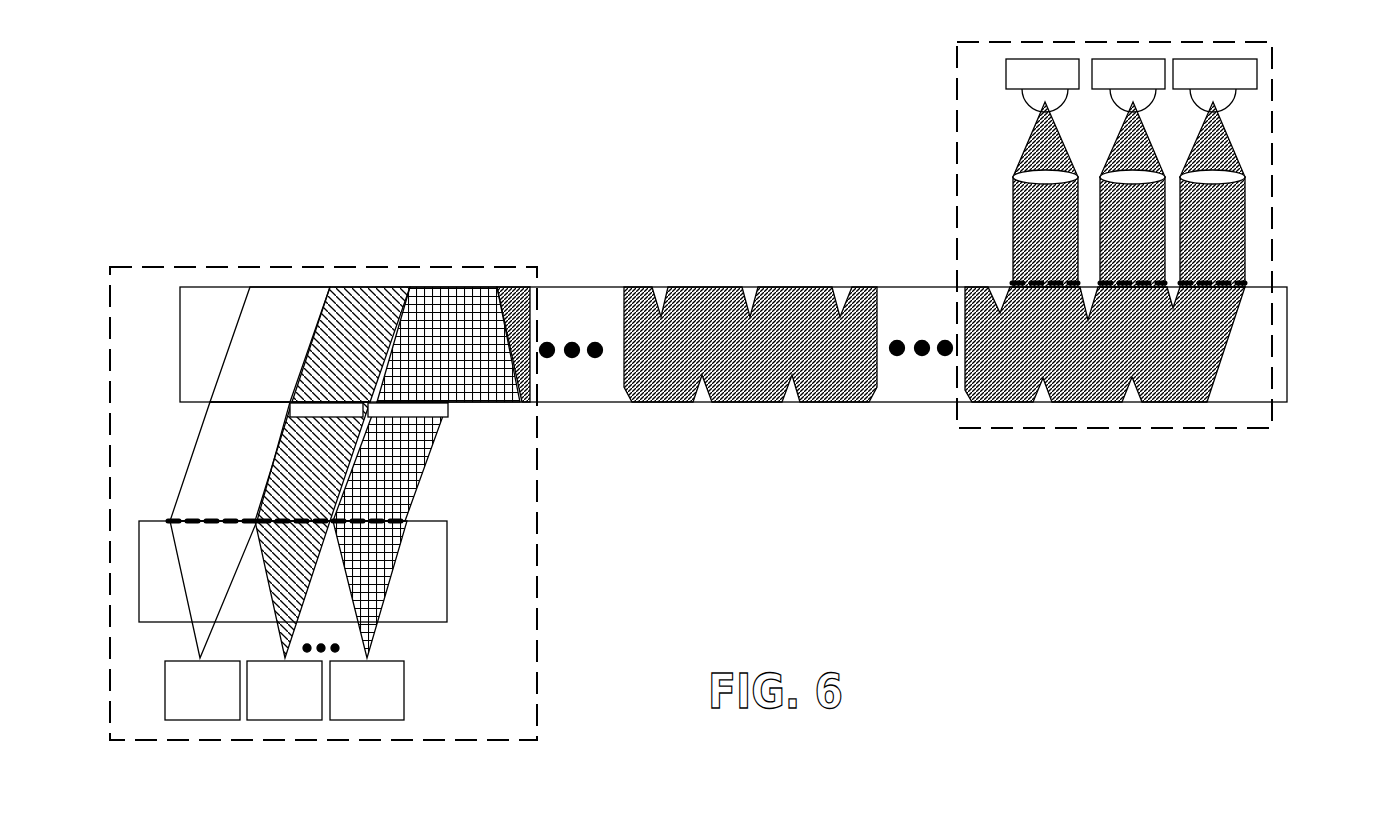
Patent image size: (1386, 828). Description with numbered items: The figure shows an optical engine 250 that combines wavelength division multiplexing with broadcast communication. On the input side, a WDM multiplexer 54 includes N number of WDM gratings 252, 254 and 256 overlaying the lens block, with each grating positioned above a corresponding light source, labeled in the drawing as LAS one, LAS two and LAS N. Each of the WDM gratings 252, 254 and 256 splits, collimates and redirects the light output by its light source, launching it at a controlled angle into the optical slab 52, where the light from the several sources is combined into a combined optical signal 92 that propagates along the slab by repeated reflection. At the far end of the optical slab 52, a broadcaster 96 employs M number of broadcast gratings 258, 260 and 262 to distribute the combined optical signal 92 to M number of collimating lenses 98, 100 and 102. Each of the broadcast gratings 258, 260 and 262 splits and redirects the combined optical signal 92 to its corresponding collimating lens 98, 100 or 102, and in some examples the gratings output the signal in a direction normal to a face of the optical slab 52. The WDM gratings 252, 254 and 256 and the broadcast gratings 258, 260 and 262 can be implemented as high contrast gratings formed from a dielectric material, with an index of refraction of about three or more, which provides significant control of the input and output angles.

The optical engine 250 is at (553, 144).
The optical slab 52 is at (592, 285).
The WDM multiplexer 54 is at (267, 266).
The combined optical signal 92 is at (488, 287).
The broadcaster 96 is at (957, 44).
The collimating lens 98 is at (1015, 173).
The collimating lens 100 is at (1100, 177).
The collimating lens 102 is at (1245, 170).
The WDM grating 252 is at (197, 518).
The WDM grating 254 is at (257, 522).
The WDM grating 256 is at (393, 520).
The broadcast grating 258 is at (1017, 283).
The broadcast grating 260 is at (1140, 283).
The broadcast grating 262 is at (1217, 283).